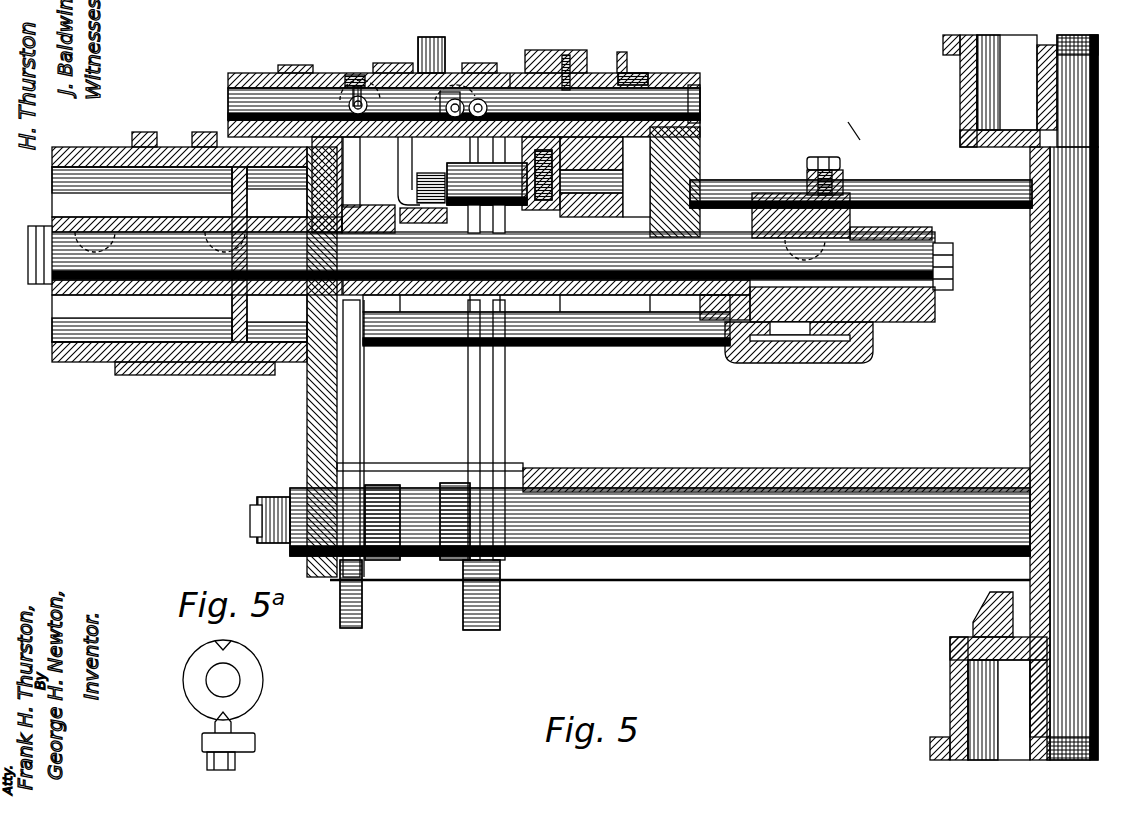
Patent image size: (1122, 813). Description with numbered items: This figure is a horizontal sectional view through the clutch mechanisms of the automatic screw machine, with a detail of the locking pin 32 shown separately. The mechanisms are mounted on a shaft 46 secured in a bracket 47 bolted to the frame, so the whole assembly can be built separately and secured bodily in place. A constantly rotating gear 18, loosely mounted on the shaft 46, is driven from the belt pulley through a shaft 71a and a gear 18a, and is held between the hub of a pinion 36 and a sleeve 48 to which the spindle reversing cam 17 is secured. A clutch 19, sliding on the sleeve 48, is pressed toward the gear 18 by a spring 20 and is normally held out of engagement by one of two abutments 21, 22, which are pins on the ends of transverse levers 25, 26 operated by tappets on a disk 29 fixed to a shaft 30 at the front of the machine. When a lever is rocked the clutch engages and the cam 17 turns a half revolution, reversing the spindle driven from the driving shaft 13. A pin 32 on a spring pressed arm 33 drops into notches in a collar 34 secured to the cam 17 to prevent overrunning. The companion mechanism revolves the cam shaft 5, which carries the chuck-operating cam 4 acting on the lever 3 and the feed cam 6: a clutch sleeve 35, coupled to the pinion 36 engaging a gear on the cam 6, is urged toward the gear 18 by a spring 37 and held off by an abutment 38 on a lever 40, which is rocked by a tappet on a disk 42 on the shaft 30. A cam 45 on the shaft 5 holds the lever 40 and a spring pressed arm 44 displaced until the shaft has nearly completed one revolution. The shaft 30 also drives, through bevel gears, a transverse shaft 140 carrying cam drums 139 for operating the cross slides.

In FIG. 5, the lever 3 is at (840, 173).
In FIG. 5, the cam 4 is at (830, 340).
In FIG. 5, the cam shaft 5 is at (594, 258).
In FIG. 5, the cam 6 is at (150, 142).
In FIG. 5, the driving shaft 13 is at (560, 192).
In FIG. 5, the cam 17 is at (580, 50).
In FIG. 5, the gear 18 is at (445, 38).
In FIG. 5, the gear 18a is at (440, 216).
In FIG. 5, the clutch 19 is at (470, 70).
In FIG. 5, the spring 20 is at (510, 74).
In FIG. 5, the abutment 21 is at (460, 92).
In FIG. 5, the abutment 22 is at (535, 103).
In FIG. 5, the lever 25 is at (456, 392).
In FIG. 5, the lever 26 is at (507, 222).
In FIG. 5, the disk 29 is at (500, 606).
In FIG. 5, the shaft 30 is at (690, 552).
In FIG. 5A, the pin 32 is at (232, 727).
In FIG. 5, the spring pressed arm 33 is at (632, 215).
In FIG. 5A, the spring pressed arm 33 is at (202, 747).
In FIG. 5, the collar 34 is at (640, 76).
In FIG. 5A, the collar 34 is at (261, 666).
In FIG. 5, the clutch sleeve 35 is at (380, 70).
In FIG. 5, the pinion 36 is at (305, 66).
In FIG. 5, the spring 37 is at (352, 82).
In FIG. 5, the abutment 38 is at (358, 92).
In FIG. 5, the lever 40 is at (370, 386).
In FIG. 5, the disk 42 is at (362, 607).
In FIG. 5, the spring pressed arm 44 is at (398, 162).
In FIG. 5, the cam 45 is at (362, 206).
In FIG. 5, the shaft 46 is at (700, 101).
In FIG. 5A, the shaft 46 is at (205, 674).
In FIG. 5, the bracket 47 is at (700, 143).
In FIG. 5, the sleeve 48 is at (613, 64).
In FIG. 5, the shaft 71a is at (890, 192).
In FIG. 5, the cam drum 139 is at (948, 664).
In FIG. 5, the shaft 140 is at (1047, 400).